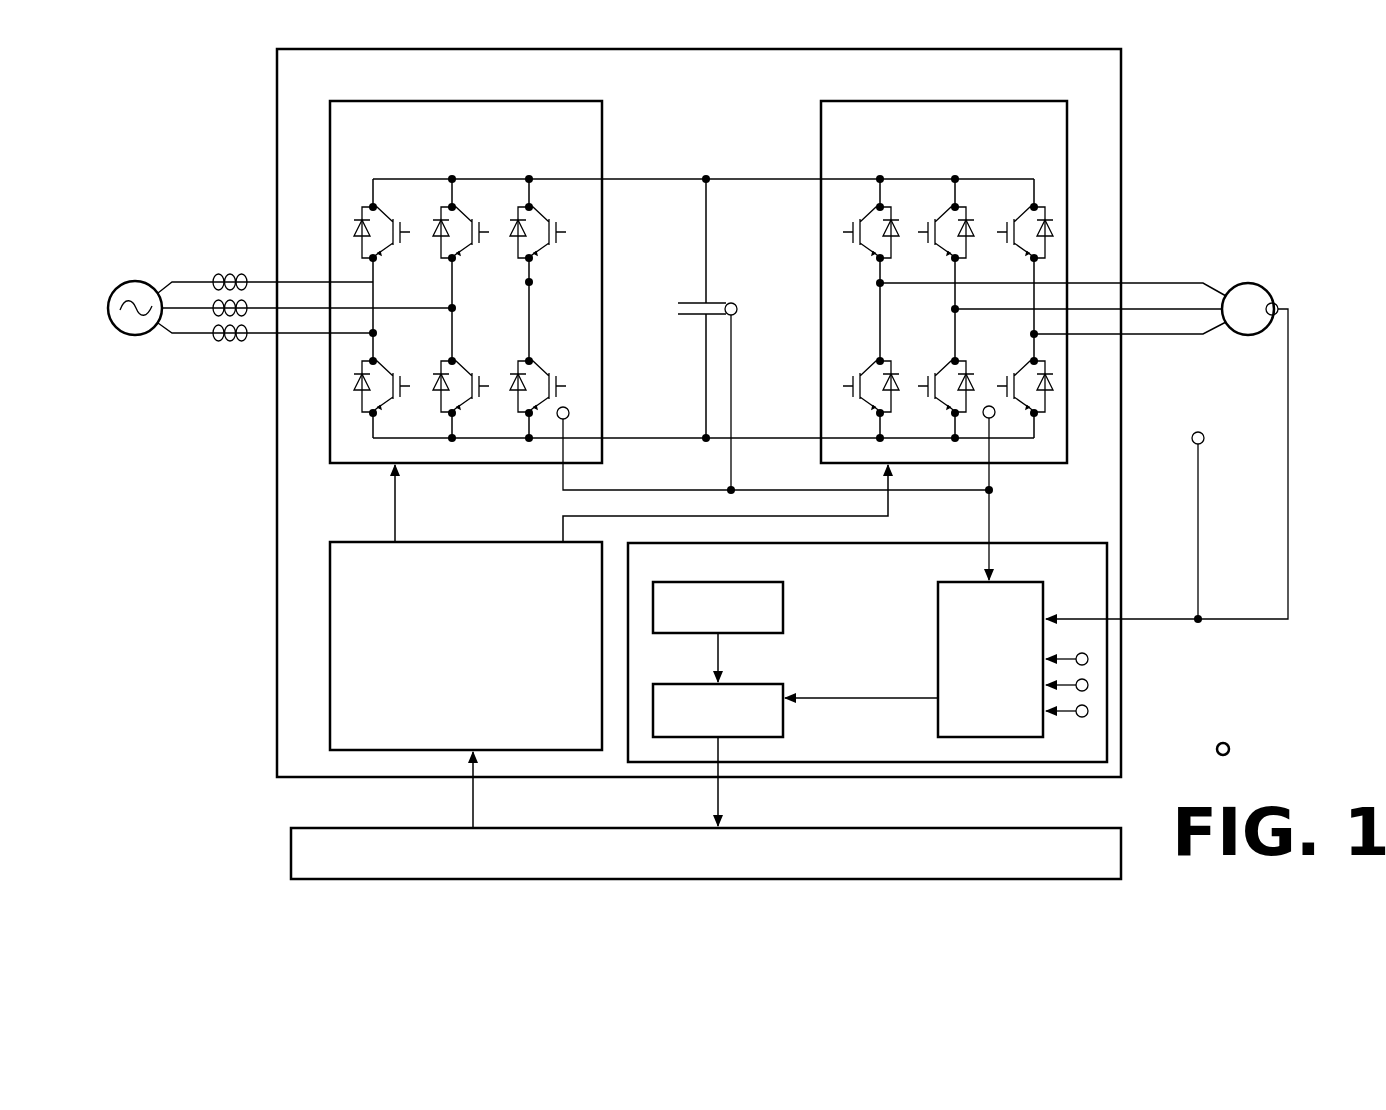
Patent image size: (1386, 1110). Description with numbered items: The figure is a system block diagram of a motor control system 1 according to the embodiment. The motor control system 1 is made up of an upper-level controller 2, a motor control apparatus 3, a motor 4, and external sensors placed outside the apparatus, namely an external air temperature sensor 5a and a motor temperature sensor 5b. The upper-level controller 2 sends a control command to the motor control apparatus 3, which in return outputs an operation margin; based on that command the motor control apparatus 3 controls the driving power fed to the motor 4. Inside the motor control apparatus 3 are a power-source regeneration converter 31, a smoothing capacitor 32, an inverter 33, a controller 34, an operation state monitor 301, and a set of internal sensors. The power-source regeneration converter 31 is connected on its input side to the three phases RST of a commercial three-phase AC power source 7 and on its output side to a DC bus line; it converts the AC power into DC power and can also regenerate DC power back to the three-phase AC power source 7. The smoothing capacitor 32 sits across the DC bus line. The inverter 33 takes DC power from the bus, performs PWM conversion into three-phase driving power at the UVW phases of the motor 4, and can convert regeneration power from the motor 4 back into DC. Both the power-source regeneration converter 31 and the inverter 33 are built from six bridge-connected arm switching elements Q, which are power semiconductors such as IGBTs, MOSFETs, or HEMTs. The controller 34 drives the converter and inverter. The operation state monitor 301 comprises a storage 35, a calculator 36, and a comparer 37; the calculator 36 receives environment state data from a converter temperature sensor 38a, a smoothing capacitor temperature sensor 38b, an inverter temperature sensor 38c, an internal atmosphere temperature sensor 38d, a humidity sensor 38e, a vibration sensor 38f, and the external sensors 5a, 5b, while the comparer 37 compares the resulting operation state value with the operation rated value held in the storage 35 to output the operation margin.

The motor control system 1 is at (1252, 132).
The upper-level controller 2 is at (291, 851).
The motor control apparatus 3 is at (275, 99).
The motor 4 is at (1225, 292).
The external air temperature sensor 5a is at (1198, 432).
The motor temperature sensor 5b is at (1277, 303).
The three-phase AC power source 7 is at (135, 281).
The power-source regeneration converter 31 is at (666, 308).
The smoothing capacitor 32 is at (700, 303).
The inverter 33 is at (1068, 149).
The controller 34 is at (330, 612).
The storage 35 is at (786, 597).
The calculator 36 is at (938, 605).
The comparer 37 is at (690, 684).
The converter temperature sensor 38a is at (569, 411).
The smoothing capacitor temperature sensor 38b is at (737, 304).
The inverter temperature sensor 38c is at (994, 418).
The internal atmosphere temperature sensor 38d is at (1088, 659).
The humidity sensor 38e is at (1088, 685).
The vibration sensor 38f is at (1088, 711).
The operation state monitor 301 is at (908, 637).
The arm switching element Q is at (358, 218).